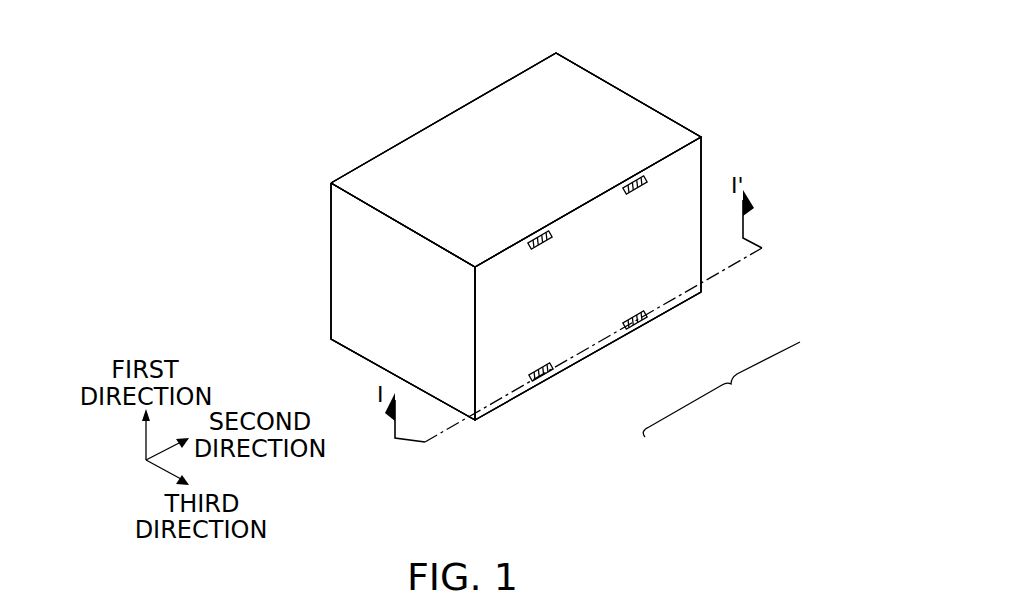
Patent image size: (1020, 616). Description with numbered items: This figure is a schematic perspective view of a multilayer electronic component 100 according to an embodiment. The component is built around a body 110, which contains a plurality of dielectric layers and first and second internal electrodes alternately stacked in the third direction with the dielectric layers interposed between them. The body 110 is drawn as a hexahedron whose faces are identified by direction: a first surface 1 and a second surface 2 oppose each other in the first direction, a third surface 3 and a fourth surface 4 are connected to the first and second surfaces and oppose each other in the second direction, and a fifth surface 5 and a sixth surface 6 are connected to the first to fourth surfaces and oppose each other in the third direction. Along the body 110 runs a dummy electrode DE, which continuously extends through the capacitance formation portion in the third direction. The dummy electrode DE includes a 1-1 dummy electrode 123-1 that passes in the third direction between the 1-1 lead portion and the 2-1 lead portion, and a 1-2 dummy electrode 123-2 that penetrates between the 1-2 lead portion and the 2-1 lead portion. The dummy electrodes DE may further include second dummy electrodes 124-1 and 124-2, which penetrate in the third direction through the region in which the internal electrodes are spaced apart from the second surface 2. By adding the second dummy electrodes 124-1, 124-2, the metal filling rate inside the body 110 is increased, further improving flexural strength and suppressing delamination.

The multilayer electronic component 100 is at (318, 32).
The body 110 is at (468, 147).
The first surface 1 is at (518, 420).
The second surface 2 is at (514, 104).
The third surface 3 is at (378, 338).
The fourth surface 4 is at (686, 118).
The fifth surface 5 is at (370, 148).
The sixth surface 6 is at (690, 165).
The 1-1 dummy electrode 123-1 is at (553, 377).
The 1-2 dummy electrode 123-2 is at (647, 321).
The second dummy electrode 124-1 is at (553, 243).
The second dummy electrode 124-2 is at (647, 189).
The dummy electrode DE is at (721, 389).